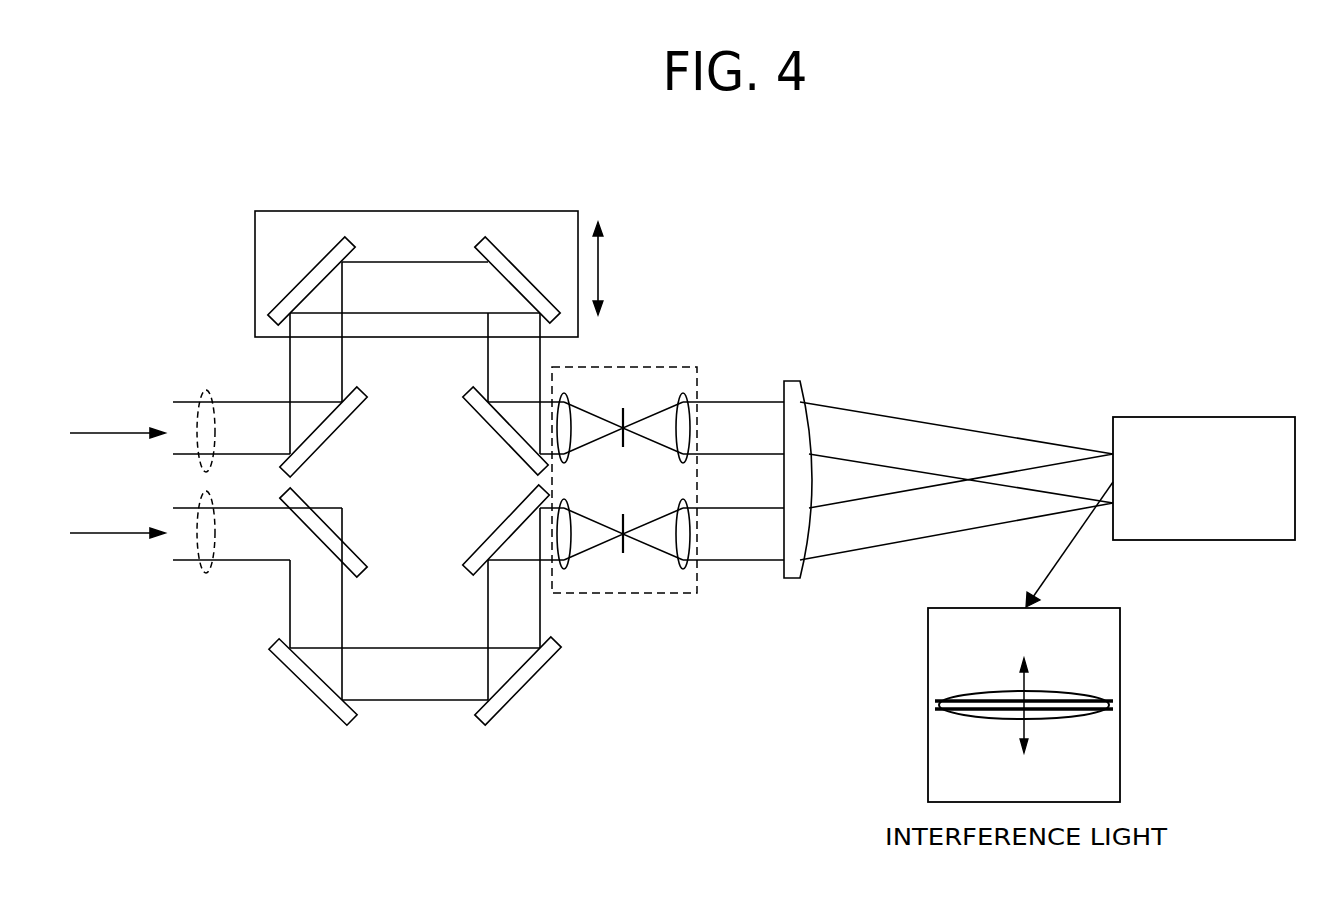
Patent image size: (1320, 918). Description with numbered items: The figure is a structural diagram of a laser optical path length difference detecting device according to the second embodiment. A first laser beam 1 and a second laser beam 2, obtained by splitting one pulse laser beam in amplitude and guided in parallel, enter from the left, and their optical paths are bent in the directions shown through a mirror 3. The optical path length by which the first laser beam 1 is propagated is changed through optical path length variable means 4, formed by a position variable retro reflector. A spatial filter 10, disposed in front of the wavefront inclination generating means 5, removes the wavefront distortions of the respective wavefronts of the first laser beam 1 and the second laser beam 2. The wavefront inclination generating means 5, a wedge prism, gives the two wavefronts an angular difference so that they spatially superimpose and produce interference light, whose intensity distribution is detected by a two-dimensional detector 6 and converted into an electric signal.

The first laser beam 1 is at (206, 390).
The second laser beam 2 is at (206, 575).
The mirror 3 is at (288, 675).
The optical path length variable means 4 is at (543, 211).
The wavefront inclination generating means 5 is at (796, 381).
The two-dimensional detector 6 is at (1278, 417).
The spatial filter 10 is at (603, 593).